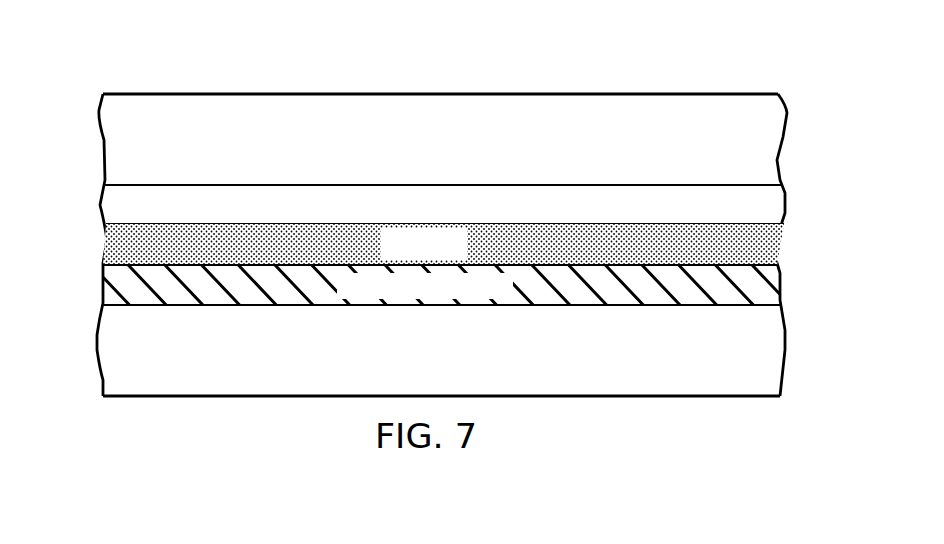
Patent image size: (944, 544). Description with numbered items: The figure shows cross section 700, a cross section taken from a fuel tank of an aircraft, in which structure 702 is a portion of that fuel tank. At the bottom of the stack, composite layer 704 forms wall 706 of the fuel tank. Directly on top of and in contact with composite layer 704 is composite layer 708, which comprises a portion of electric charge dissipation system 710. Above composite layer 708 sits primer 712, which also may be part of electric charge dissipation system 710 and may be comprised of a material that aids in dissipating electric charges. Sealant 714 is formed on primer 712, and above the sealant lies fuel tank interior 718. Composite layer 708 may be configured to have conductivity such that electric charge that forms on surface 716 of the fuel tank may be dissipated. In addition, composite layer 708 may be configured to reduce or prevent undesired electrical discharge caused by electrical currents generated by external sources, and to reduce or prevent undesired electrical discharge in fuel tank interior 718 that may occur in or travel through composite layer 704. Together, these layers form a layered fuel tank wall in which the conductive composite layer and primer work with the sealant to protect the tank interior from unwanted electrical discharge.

The cross section 700 is at (446, 228).
The structure 702 is at (687, 397).
The composite layer 704 is at (99, 350).
The wall 706 is at (223, 397).
The composite layer 708 is at (103, 283).
The electric charge dissipation system 710 is at (793, 282).
The primer 712 is at (105, 245).
The sealant 714 is at (100, 206).
The surface 716 is at (295, 165).
The fuel tank interior 718 is at (103, 140).